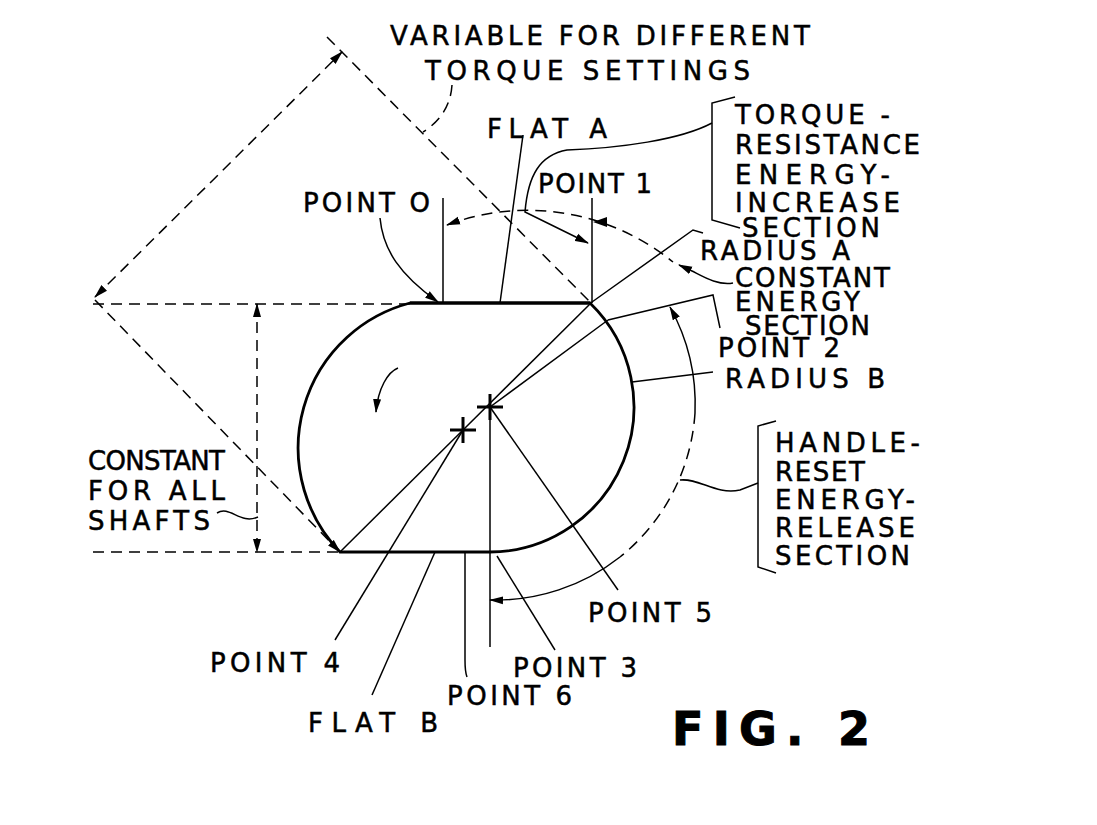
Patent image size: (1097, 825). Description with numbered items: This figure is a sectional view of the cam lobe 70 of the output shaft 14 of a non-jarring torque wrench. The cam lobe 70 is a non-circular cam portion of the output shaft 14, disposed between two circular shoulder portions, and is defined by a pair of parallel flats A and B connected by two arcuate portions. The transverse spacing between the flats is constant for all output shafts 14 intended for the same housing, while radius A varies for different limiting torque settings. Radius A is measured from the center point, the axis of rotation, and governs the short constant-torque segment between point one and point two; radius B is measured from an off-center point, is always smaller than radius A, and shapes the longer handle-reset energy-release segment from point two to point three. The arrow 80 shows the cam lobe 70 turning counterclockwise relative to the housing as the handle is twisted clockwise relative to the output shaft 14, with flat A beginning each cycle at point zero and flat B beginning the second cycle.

The cam lobe 70 is at (420, 300).
The output shaft 14 is at (473, 298).
The arrow 80 is at (398, 368).